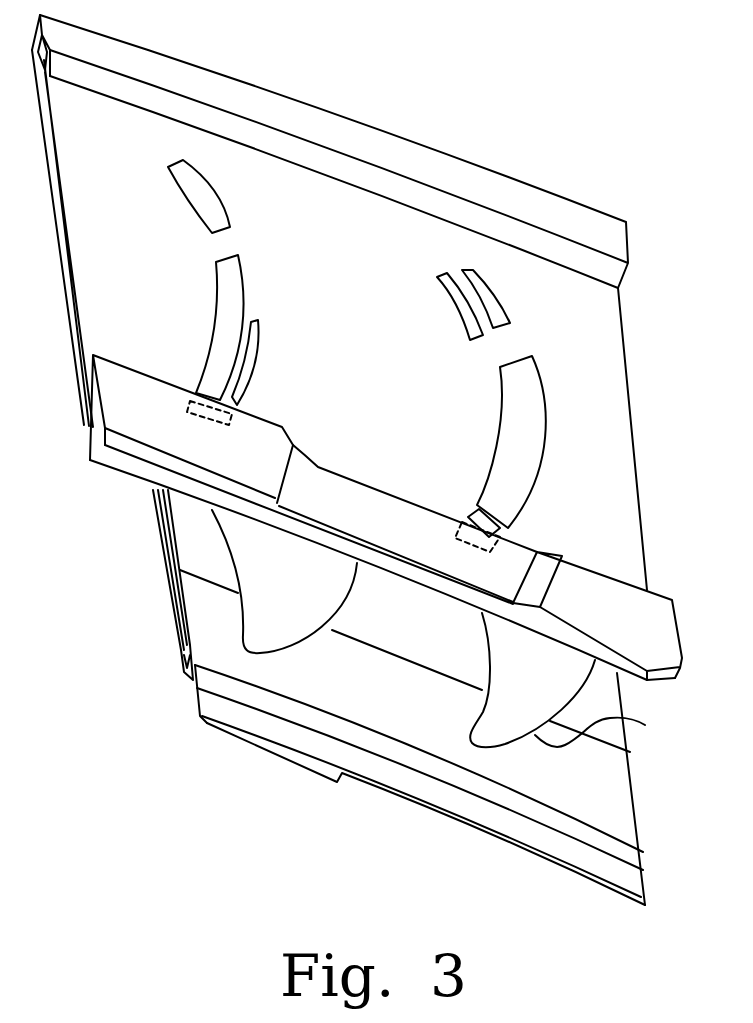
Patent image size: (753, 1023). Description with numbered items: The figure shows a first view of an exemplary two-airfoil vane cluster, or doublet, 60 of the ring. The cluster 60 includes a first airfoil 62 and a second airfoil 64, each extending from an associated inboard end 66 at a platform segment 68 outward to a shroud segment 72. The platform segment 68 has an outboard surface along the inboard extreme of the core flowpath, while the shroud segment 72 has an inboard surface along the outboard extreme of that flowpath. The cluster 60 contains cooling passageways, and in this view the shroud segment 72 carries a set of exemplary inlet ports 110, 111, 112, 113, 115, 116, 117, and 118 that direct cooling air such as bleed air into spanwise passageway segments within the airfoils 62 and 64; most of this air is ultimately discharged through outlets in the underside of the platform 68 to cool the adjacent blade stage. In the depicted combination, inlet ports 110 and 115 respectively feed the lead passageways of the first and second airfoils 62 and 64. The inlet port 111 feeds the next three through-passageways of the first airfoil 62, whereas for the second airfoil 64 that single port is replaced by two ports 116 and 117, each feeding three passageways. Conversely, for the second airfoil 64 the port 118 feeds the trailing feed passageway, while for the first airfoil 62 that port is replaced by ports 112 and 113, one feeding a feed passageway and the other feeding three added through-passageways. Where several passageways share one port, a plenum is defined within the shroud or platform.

The two-airfoil cluster 60 is at (511, 99).
The first airfoil 62 is at (505, 720).
The second airfoil 64 is at (270, 630).
The inboard end 66 is at (605, 732).
The platform segment 68 is at (618, 806).
The shroud segment 72 is at (601, 461).
The inlet port 110 is at (480, 547).
The inlet port 111 is at (529, 430).
The inlet port 112 is at (497, 303).
The inlet port 113 is at (462, 311).
The inlet port 115 is at (205, 425).
The inlet port 116 is at (221, 346).
The inlet port 117 is at (248, 366).
The inlet port 118 is at (207, 201).